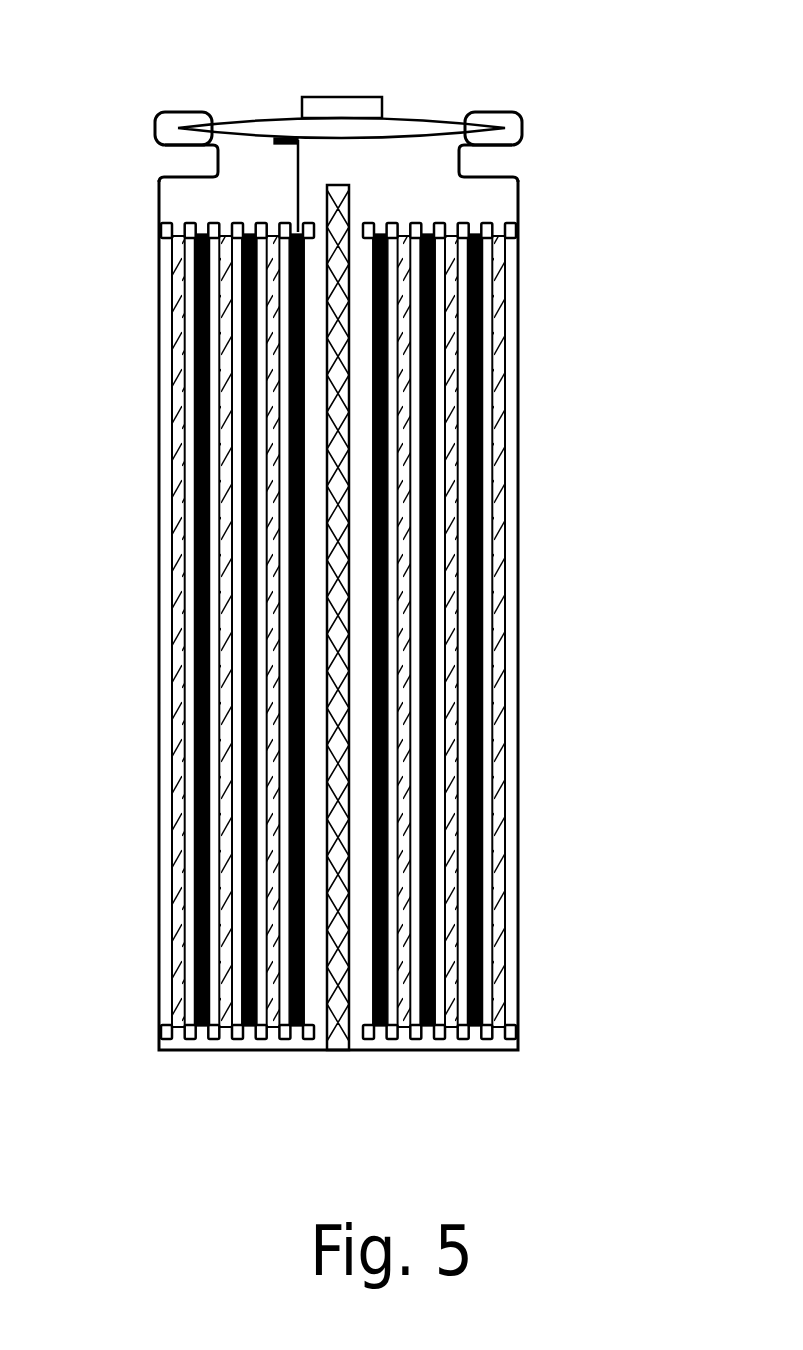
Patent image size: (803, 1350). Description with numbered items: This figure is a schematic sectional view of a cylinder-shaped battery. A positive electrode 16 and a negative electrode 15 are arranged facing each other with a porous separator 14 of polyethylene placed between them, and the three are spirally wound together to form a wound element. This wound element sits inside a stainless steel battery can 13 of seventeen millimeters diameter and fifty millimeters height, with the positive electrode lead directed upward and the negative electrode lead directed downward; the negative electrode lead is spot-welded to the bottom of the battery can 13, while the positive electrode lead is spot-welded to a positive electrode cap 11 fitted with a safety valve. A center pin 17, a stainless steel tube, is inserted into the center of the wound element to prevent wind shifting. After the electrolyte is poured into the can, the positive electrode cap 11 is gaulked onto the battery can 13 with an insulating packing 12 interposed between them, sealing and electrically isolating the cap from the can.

The positive electrode cap 11 is at (350, 97).
The insulating packing 12 is at (523, 122).
The battery can 13 is at (518, 195).
The porous separator 14 is at (521, 660).
The negative electrode 15 is at (176, 501).
The positive electrode 16 is at (203, 233).
The center pin 17 is at (336, 1040).